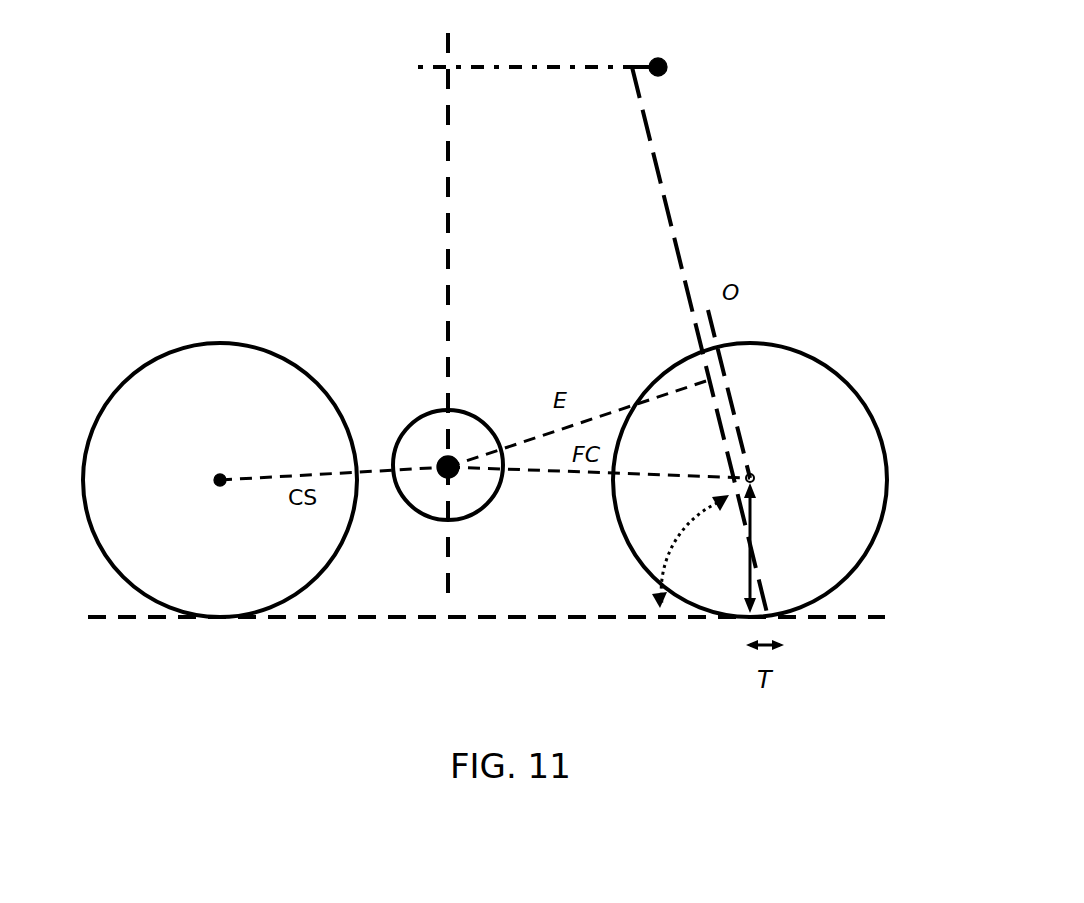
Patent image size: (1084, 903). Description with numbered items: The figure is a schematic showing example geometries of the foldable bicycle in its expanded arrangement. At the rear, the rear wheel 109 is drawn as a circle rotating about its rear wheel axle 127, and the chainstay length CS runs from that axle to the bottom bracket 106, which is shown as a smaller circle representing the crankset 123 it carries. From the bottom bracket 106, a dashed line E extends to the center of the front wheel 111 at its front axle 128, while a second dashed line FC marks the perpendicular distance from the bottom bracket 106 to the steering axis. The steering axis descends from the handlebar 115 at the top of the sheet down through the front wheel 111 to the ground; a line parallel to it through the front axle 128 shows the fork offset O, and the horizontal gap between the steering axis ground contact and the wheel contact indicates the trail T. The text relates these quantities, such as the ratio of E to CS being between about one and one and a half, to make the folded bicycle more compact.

The rear wheel 109 is at (193, 342).
The rear wheel axle 127 is at (214, 480).
The crankset 123 is at (455, 519).
The bottom bracket 106 is at (458, 470).
The handlebar 115 is at (663, 60).
The front wheel 111 is at (763, 343).
The front axle 128 is at (756, 477).